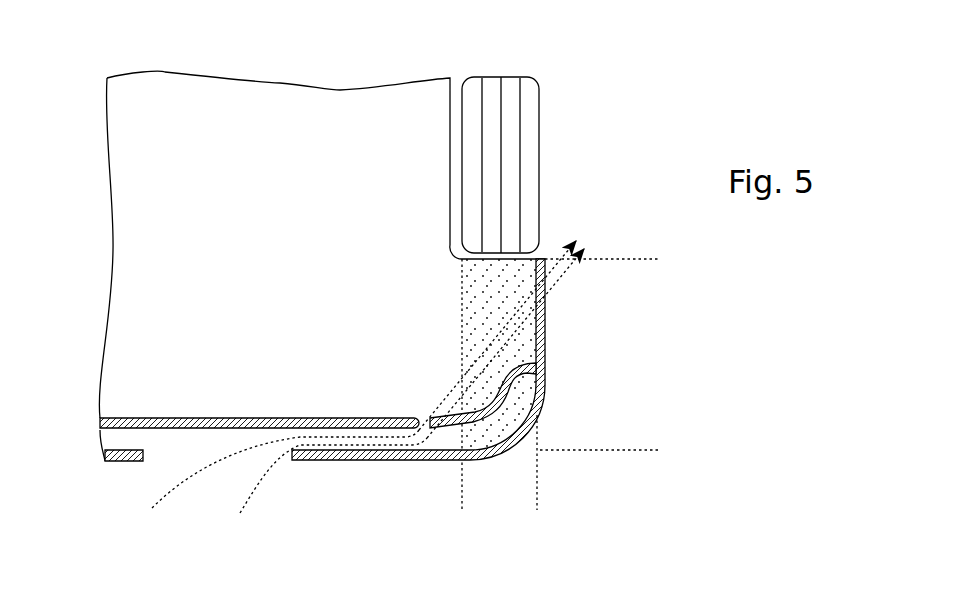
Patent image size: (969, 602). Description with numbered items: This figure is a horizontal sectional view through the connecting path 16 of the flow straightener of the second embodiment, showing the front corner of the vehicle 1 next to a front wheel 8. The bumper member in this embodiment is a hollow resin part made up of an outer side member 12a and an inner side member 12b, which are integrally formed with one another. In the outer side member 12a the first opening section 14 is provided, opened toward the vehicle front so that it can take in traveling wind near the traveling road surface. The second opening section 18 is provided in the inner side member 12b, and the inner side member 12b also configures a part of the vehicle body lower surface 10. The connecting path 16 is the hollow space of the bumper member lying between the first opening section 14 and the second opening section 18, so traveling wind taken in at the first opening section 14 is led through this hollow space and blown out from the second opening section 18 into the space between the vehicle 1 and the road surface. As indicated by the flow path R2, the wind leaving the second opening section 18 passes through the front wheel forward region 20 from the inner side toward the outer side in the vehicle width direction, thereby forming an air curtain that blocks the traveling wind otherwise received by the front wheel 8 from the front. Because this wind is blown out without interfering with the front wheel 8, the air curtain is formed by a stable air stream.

The vehicle 1 is at (631, 99).
The front wheel 8 is at (540, 168).
The vehicle body lower surface 10 is at (186, 139).
The outer side member 12a is at (335, 462).
The inner side member 12b is at (306, 418).
The first opening section 14 is at (143, 463).
The connecting path 16 is at (219, 444).
The second opening section 18 is at (418, 418).
The front wheel forward region 20 is at (475, 312).
The flow path R2 is at (539, 335).